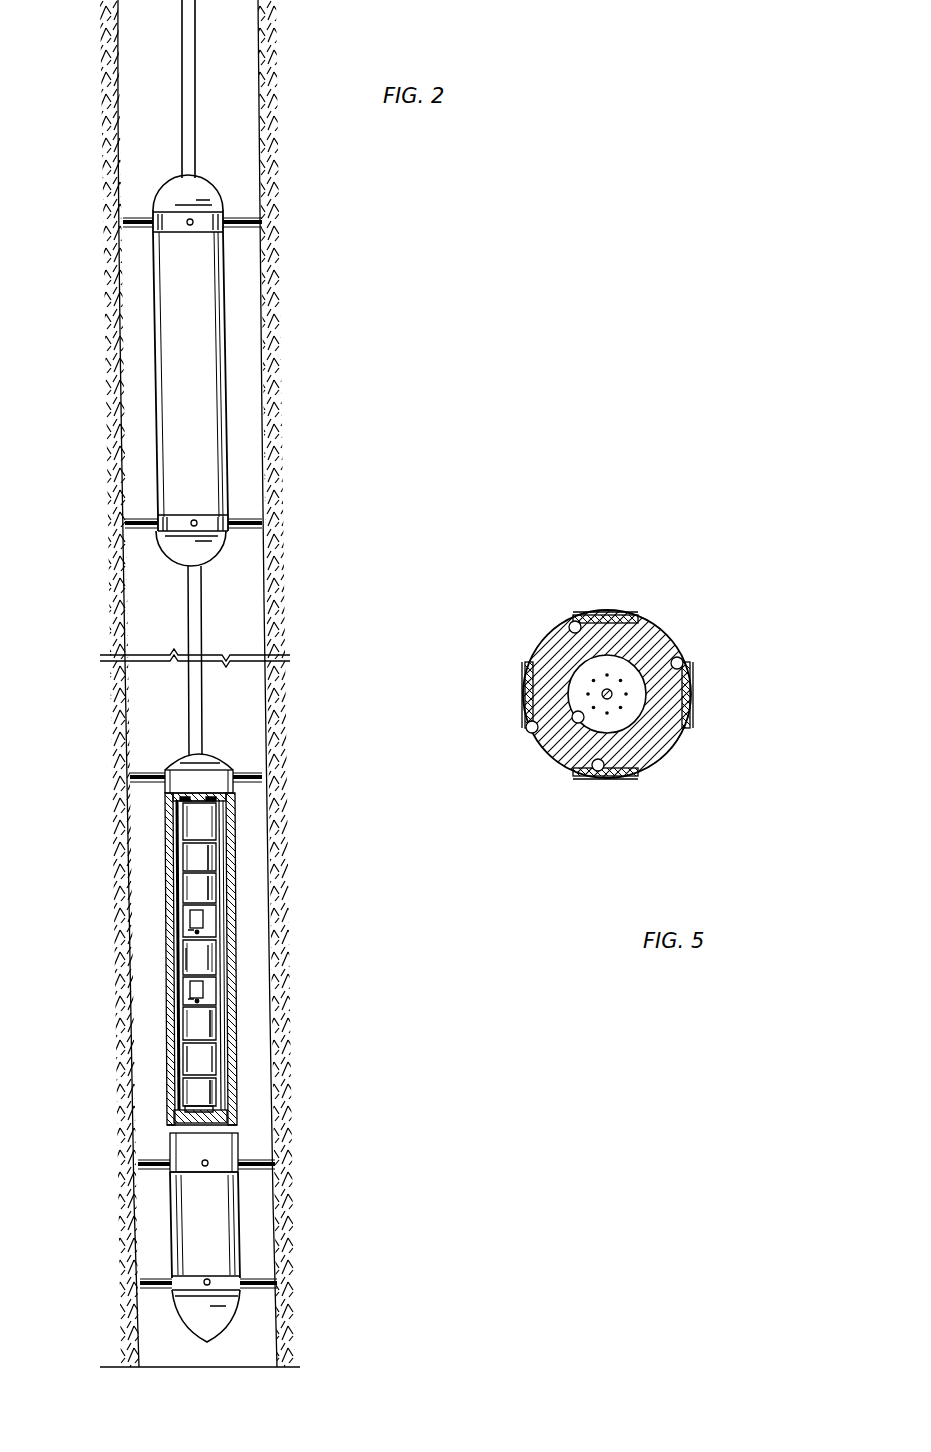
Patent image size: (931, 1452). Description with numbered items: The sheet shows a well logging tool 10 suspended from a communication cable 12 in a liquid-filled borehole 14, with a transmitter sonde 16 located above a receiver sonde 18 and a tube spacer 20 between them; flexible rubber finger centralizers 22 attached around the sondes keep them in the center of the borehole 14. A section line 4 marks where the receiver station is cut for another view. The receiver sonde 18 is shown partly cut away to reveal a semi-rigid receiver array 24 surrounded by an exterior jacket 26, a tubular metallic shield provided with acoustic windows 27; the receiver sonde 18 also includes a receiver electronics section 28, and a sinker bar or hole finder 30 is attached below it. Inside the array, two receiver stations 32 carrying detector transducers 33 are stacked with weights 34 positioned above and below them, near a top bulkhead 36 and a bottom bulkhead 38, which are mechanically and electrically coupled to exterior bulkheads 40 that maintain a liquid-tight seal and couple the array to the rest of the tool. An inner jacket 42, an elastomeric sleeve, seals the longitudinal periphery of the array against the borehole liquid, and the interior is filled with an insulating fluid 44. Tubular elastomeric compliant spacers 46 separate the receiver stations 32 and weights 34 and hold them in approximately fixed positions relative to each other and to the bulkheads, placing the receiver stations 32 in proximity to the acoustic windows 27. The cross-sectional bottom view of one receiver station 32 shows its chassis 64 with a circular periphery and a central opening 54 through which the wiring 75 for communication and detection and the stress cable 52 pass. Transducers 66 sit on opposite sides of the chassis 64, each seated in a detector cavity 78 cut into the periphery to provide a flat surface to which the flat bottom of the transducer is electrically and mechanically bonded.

In FIG. 2, the section line 4- 4 is at (173, 779).
In FIG. 2, the well logging tool 10 is at (188, 370).
In FIG. 2, the communication cable 12 is at (192, 52).
In FIG. 2, the borehole 14 is at (114, 47).
In FIG. 2, the transmitter sonde 16 is at (172, 380).
In FIG. 2, the receiver sonde 18 is at (238, 876).
In FIG. 2, the tube spacer 20 is at (202, 608).
In FIG. 2, the finger centralizers 22 is at (135, 219).
In FIG. 2, the semi-rigid receiver array 24 is at (234, 897).
In FIG. 2, the exterior jacket 26 is at (168, 822).
In FIG. 2, the acoustic windows 27 is at (190, 927).
In FIG. 2, the receiver electronics section 28 is at (230, 1218).
In FIG. 2, the sinker bar or hole finder 30 is at (226, 1312).
In FIG. 2, the receiver station 32 is at (181, 950).
In FIG. 5, the receiver station 32 is at (607, 688).
In FIG. 2, the detector transducers 33 is at (196, 913).
In FIG. 2, the weights 34 is at (190, 855).
In FIG. 2, the top bulkhead 36 is at (219, 806).
In FIG. 2, the bottom bulkhead 38 is at (190, 1103).
In FIG. 2, the exterior bulkheads 40 is at (167, 792).
In FIG. 2, the inner jacket 42 is at (219, 955).
In FIG. 2, the insulating fluid 44 is at (226, 965).
In FIG. 2, the compliant spacers 46 is at (219, 833).
In FIG. 5, the stress cable 52 is at (613, 700).
In FIG. 5, the opening 54 is at (578, 724).
In FIG. 5, the chassis 64 is at (534, 742).
In FIG. 5, the transducers 66 is at (607, 615).
In FIG. 5, the wiring 75 is at (592, 679).
In FIG. 5, the detector cavity 78 is at (569, 623).